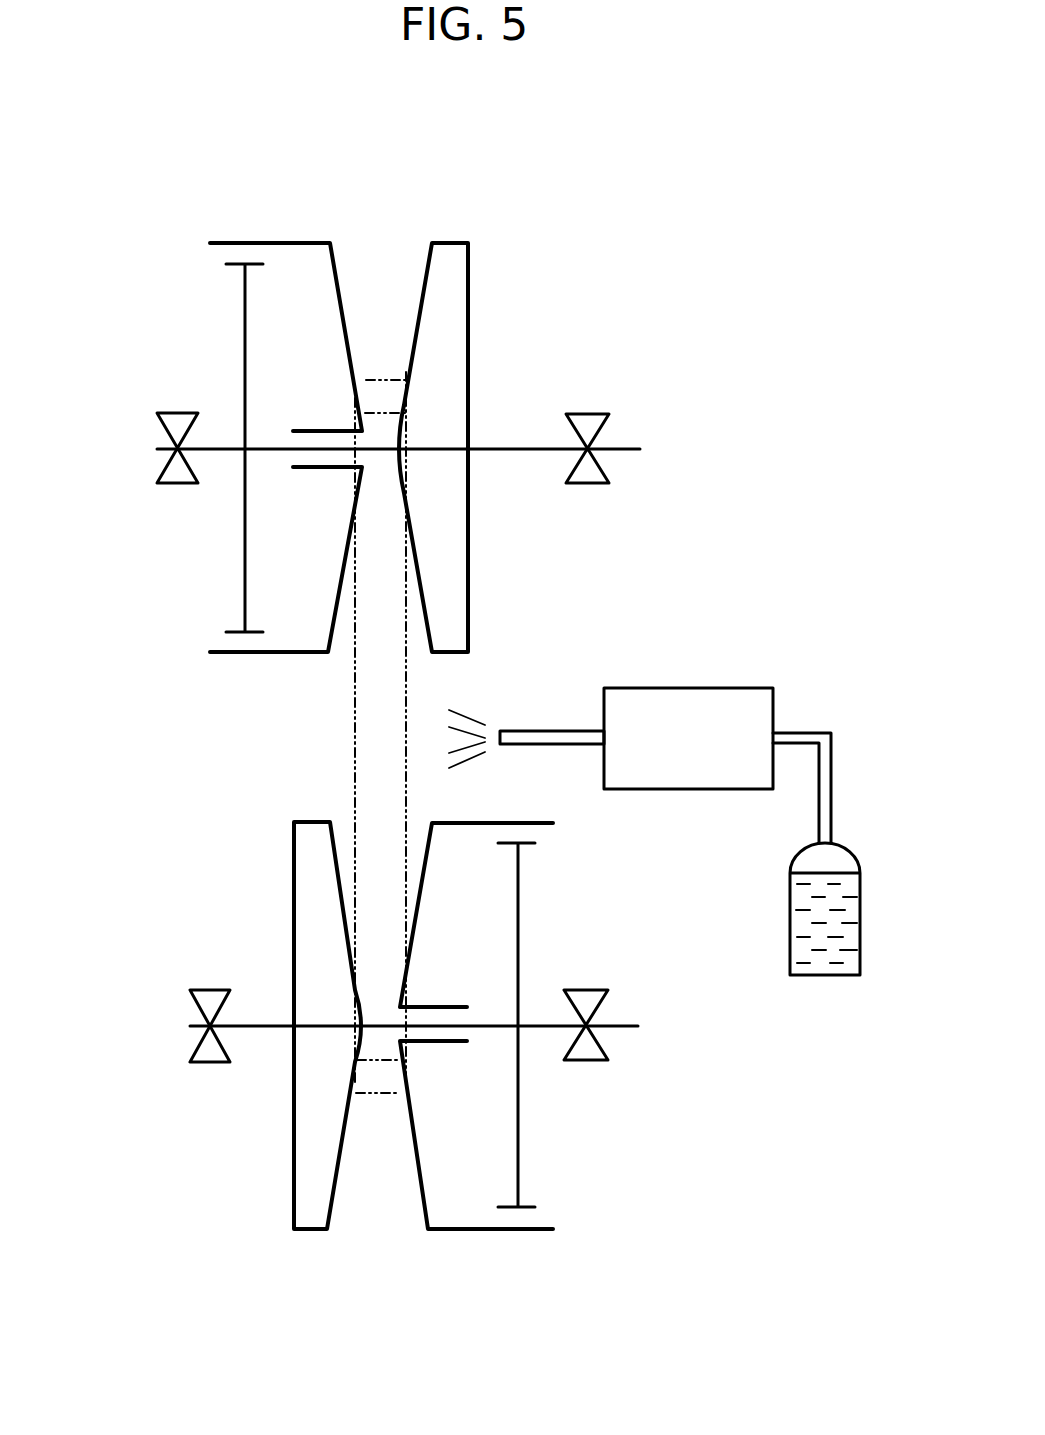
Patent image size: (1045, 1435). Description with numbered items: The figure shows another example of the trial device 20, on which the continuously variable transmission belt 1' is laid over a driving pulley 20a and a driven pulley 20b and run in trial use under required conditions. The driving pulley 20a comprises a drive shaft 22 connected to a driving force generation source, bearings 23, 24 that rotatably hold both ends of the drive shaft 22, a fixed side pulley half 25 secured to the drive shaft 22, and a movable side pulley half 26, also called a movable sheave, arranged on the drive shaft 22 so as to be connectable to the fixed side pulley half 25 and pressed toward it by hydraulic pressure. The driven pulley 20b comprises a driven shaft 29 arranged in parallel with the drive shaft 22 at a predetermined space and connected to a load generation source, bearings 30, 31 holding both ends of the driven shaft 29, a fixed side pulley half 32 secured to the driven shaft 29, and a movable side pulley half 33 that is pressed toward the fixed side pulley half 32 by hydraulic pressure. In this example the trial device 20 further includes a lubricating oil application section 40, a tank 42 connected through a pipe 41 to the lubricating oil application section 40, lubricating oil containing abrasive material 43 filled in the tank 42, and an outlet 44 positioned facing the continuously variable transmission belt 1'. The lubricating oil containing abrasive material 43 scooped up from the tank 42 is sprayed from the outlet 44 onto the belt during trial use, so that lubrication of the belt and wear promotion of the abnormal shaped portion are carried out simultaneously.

The continuously variable transmission belt 1' is at (289, 732).
The trial device 20 is at (160, 1099).
The driving pulley 20a is at (380, 288).
The driven pulley 20b is at (369, 1208).
The drive shaft 22 is at (500, 447).
The bearing 23 is at (585, 414).
The bearing 24 is at (180, 413).
The fixed side pulley half 25 is at (468, 307).
The movable side pulley half 26 is at (340, 292).
The driven shaft 29 is at (255, 1026).
The bearing 30 is at (210, 990).
The bearing 31 is at (578, 990).
The fixed side pulley half 32 is at (294, 1137).
The movable side pulley half 33 is at (425, 1208).
The lubricating oil application section 40 is at (686, 688).
The pipe 41 is at (831, 765).
The tank 42 is at (788, 898).
The lubricating oil containing abrasive material 43 is at (820, 955).
The outlet 44 is at (550, 731).